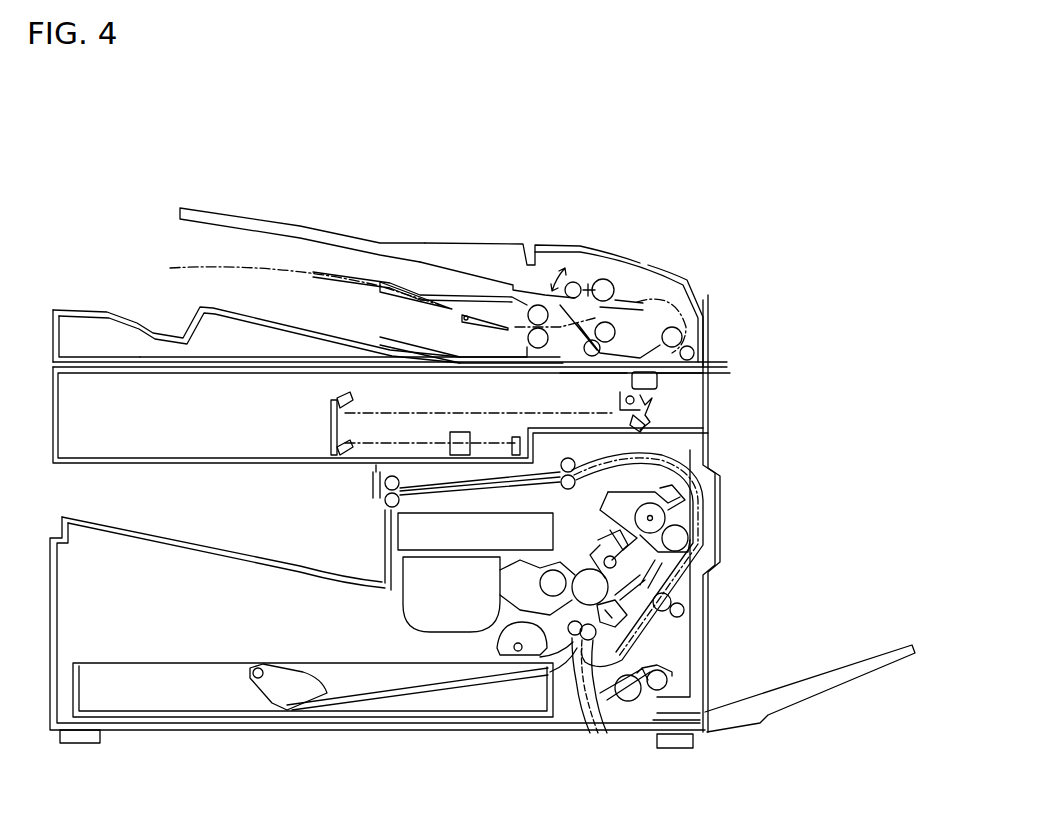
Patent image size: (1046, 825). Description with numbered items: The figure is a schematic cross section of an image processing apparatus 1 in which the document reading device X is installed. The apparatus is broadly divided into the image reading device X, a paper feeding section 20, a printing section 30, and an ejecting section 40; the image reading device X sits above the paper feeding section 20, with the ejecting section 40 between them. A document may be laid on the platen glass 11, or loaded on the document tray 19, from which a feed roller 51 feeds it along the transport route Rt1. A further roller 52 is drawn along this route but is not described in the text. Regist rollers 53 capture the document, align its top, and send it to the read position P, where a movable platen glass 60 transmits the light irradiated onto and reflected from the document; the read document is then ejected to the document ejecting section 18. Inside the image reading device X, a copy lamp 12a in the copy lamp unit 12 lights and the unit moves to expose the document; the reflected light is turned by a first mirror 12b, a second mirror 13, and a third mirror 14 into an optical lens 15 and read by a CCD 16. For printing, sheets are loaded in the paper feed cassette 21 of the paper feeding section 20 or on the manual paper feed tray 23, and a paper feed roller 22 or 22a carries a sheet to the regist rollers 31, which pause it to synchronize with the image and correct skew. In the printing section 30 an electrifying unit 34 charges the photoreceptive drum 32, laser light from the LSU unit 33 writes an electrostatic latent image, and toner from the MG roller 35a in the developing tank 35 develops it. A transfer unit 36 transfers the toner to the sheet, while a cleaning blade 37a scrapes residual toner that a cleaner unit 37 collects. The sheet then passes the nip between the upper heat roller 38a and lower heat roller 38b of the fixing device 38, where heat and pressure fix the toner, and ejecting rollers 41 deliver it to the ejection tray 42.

The image processing apparatus 1 is at (741, 217).
The platen glass 11 is at (244, 378).
The copy lamp unit 12 is at (672, 393).
The copy lamp 12a is at (620, 407).
The first mirror 12b is at (633, 420).
The second mirror 13 is at (333, 408).
The third mirror 14 is at (333, 438).
The optical lens 15 is at (450, 437).
The CCD 16 is at (512, 432).
The document ejecting section 18 is at (169, 250).
The document tray 19 is at (313, 235).
The paper feeding section 20 is at (230, 611).
The paper feed cassette 21 is at (223, 670).
The paper feed roller 22 is at (493, 645).
The paper feed roller 22a is at (610, 732).
The manual paper feed tray 23 is at (780, 698).
The printing section 30 is at (838, 447).
The regist rollers 31 is at (616, 648).
The photoreceptive drum 32 is at (657, 590).
The LSU unit 33 is at (398, 530).
The electrifying unit 34 is at (577, 535).
The developing tank 35 is at (502, 597).
The MG roller 35a is at (502, 580).
The transfer unit 36 is at (620, 618).
The cleaner unit 37 is at (655, 580).
The cleaning blade 37a is at (633, 519).
The fixing device 38 is at (697, 465).
The upper heat roller 38a is at (693, 510).
The lower heat roller 38b is at (680, 545).
The ejecting section 40 is at (282, 522).
The ejecting rollers 41 is at (375, 478).
The ejection tray 42 is at (222, 550).
The feed roller 51 is at (565, 268).
The document feed roller 52 is at (618, 275).
The regist rollers 53 is at (703, 335).
The movable platen glass 60 is at (660, 377).
The read position P is at (643, 360).
The transport route Rt1 is at (698, 331).
The image reading device X is at (768, 263).